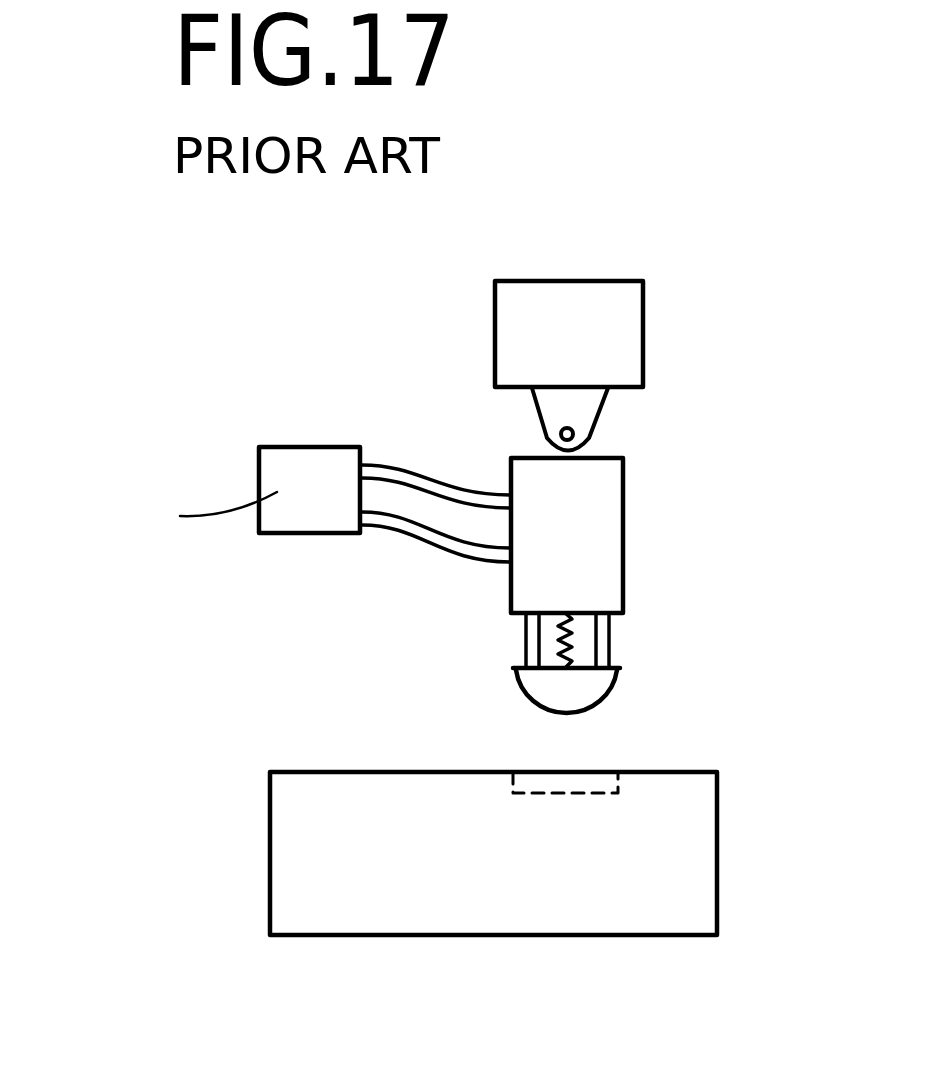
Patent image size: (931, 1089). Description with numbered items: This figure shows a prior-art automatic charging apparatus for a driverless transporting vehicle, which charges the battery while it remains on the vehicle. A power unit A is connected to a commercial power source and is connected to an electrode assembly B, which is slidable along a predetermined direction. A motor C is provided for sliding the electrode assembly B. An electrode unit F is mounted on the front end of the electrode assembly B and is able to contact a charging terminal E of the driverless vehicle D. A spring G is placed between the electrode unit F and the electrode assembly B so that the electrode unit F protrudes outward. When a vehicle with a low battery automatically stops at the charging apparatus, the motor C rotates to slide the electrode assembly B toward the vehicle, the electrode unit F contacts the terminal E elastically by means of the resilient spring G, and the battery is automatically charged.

The power unit A is at (270, 468).
The electrode assembly B is at (600, 508).
The motor C is at (627, 317).
The driverless vehicle D is at (698, 825).
The charging terminal E is at (560, 780).
The electrode unit F is at (595, 693).
The spring G is at (565, 642).